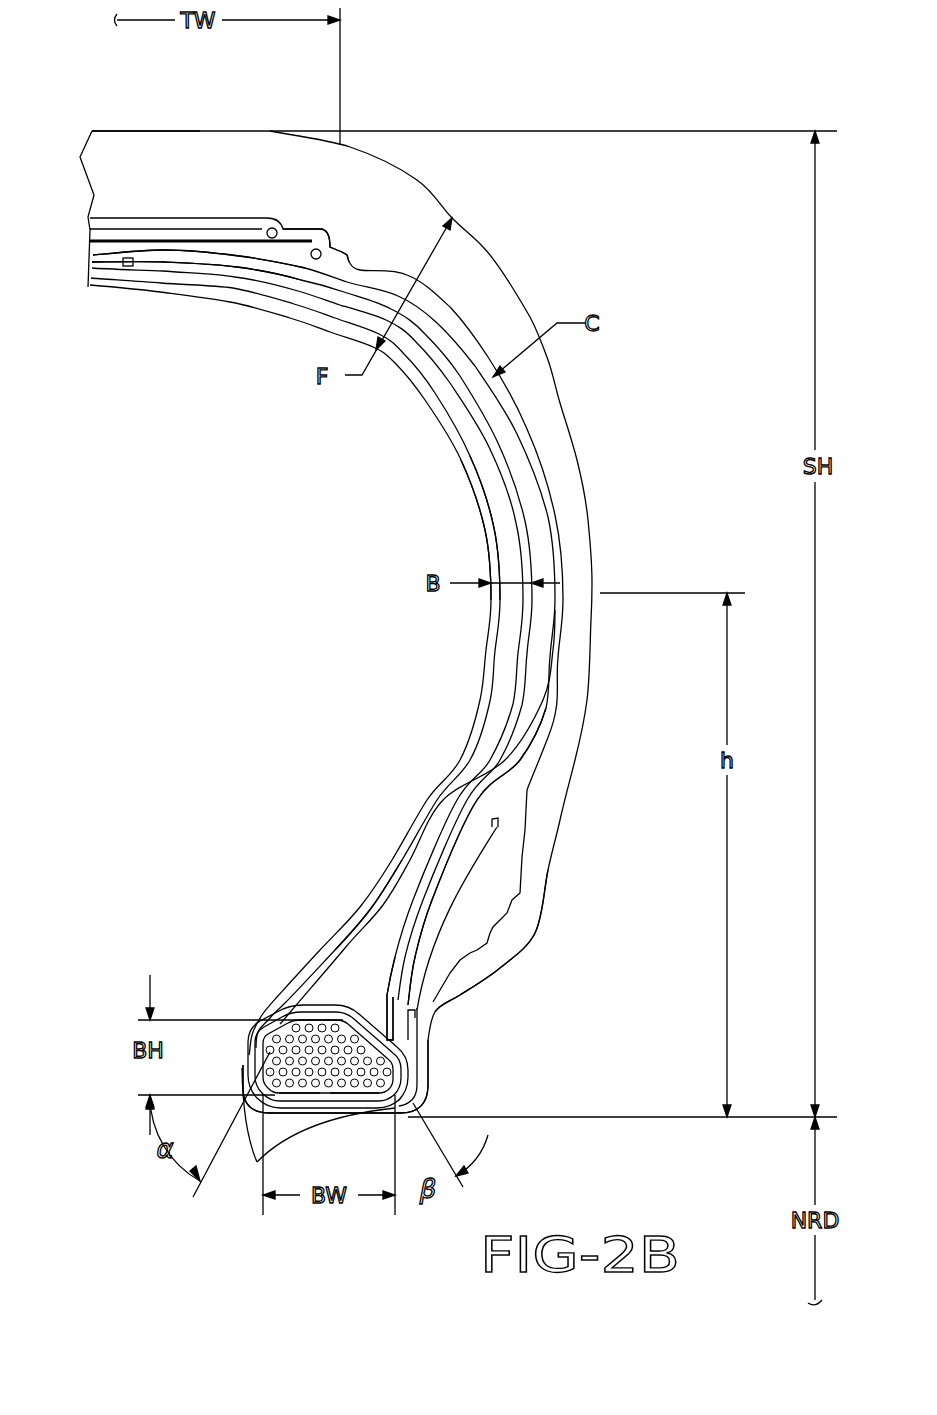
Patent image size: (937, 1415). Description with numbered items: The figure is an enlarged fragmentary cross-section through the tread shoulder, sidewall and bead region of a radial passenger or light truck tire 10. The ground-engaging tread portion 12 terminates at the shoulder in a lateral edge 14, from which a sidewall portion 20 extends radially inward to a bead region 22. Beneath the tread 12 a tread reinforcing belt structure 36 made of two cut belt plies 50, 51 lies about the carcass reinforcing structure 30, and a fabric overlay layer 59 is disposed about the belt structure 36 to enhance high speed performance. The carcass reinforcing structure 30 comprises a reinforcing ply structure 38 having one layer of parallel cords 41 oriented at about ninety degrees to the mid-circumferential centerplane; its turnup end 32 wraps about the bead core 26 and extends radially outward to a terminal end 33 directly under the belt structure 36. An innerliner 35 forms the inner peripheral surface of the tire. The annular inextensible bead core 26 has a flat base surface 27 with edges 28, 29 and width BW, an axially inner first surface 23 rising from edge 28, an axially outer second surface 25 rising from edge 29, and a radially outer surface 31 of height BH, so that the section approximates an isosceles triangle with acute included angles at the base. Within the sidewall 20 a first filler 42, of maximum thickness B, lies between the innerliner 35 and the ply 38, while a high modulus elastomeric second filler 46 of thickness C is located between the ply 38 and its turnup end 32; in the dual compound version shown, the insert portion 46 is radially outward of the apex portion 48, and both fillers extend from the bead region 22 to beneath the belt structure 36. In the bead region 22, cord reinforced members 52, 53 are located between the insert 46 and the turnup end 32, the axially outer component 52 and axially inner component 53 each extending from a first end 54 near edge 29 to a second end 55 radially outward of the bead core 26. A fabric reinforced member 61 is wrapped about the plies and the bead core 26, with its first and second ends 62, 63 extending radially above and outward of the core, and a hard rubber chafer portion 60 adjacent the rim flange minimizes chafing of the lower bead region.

The tire 10 is at (383, 100).
The tread portion 12 is at (108, 131).
The lateral edge 14 is at (347, 150).
The sidewall portion 20 is at (592, 540).
The bead region 22 is at (355, 982).
The axially inner first surface 23 is at (270, 1055).
The axially outer second surface 25 is at (390, 1063).
The bead core 26 is at (318, 1050).
The flat base surface 27 is at (360, 1097).
The edge 28 is at (290, 1097).
The edge 29 is at (398, 1085).
The carcass reinforcing structure 30 is at (182, 282).
The radially outer surface 31 is at (363, 1003).
The turnup end 32 is at (523, 438).
The terminal end 33 is at (130, 266).
The innerliner 35 is at (367, 892).
The belt structure 36 is at (128, 222).
The reinforcing ply structure 38 is at (508, 485).
The cords 41 is at (522, 532).
The first filler 42 is at (508, 568).
The second filler 46 is at (530, 520).
The apex portion 48 is at (437, 863).
The belt ply 50 is at (247, 237).
The belt ply 51 is at (250, 262).
The axially outer component 52 is at (468, 878).
The axially inner component 53 is at (478, 850).
The first end 54 is at (390, 1035).
The second end 55 is at (495, 828).
The fabric overlay layer 59 is at (190, 223).
The chafer portion 60 is at (465, 955).
The fabric reinforced member 61 is at (290, 1000).
The first end 62 is at (335, 932).
The second end 63 is at (412, 1015).